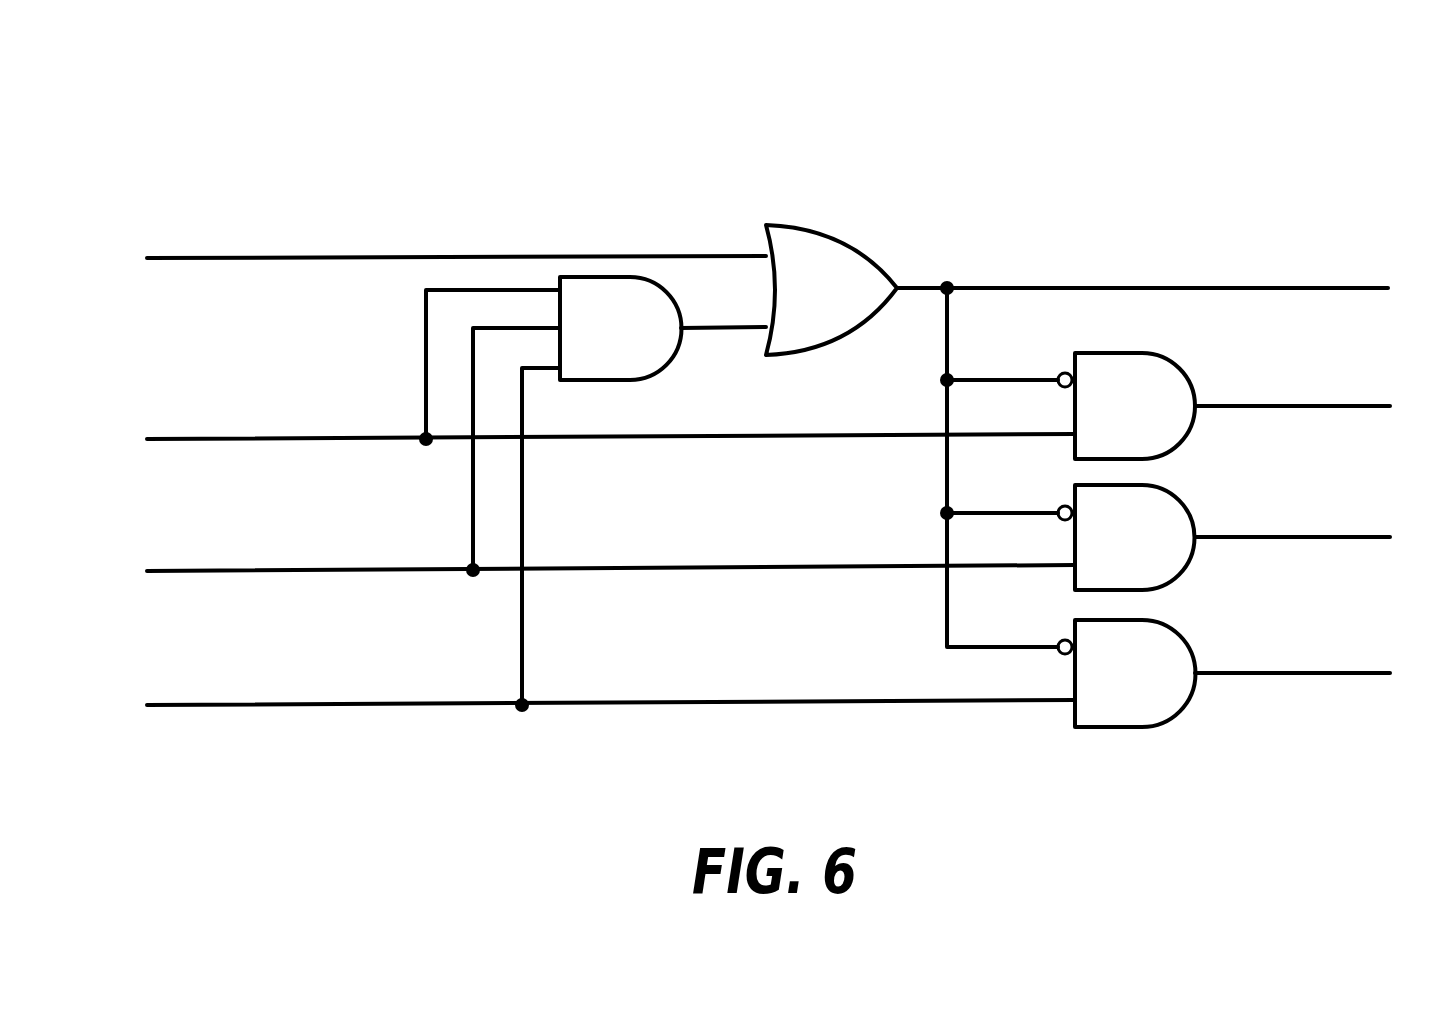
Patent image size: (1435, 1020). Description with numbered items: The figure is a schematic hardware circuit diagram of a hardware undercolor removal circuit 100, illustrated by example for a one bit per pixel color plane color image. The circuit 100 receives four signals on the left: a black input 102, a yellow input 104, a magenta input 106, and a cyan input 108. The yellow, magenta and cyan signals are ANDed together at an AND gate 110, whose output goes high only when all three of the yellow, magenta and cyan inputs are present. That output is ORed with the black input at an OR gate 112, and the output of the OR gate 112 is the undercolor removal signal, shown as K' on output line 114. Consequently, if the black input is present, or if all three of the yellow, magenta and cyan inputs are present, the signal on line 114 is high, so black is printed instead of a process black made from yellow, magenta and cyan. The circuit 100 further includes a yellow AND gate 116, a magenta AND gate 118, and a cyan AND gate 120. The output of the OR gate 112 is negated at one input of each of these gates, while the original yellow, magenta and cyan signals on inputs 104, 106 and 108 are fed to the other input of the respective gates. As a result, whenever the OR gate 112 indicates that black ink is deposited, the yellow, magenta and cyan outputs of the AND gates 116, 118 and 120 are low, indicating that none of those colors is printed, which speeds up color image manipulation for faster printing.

The hardware undercolor removal circuit 100 is at (1038, 159).
The black input 102 is at (253, 258).
The yellow input 104 is at (242, 439).
The magenta input 106 is at (253, 571).
The cyan input 108 is at (249, 705).
The AND gate 110 is at (598, 297).
The OR gate 112 is at (853, 258).
The output line 114 is at (1229, 287).
The yellow AND gate 116 is at (1175, 372).
The magenta AND gate 118 is at (1177, 513).
The cyan AND gate 120 is at (1183, 647).